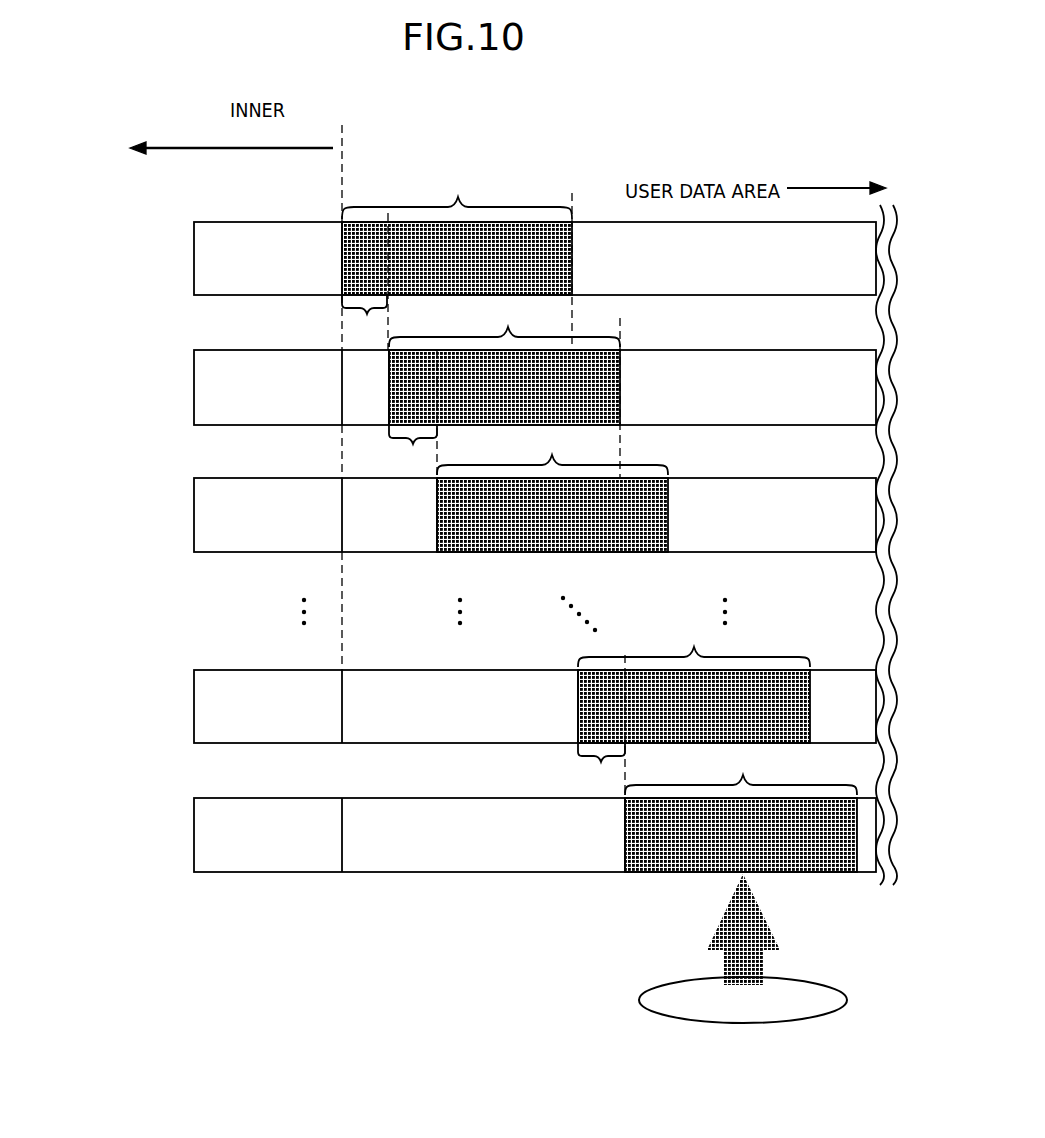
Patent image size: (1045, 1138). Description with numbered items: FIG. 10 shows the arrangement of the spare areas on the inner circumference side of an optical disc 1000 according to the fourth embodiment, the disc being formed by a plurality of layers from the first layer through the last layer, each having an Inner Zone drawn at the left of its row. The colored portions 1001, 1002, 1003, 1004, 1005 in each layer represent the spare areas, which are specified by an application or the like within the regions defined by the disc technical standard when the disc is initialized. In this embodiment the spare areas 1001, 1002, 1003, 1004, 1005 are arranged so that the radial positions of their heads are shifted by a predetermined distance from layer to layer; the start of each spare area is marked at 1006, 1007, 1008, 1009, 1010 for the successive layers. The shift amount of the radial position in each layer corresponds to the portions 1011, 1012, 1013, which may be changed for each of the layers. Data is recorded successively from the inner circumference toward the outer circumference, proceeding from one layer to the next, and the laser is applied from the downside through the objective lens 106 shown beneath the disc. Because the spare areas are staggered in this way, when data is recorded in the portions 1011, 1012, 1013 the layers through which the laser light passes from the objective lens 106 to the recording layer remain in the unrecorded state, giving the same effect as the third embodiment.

The optical disc 1000 is at (120, 225).
The spare area 1001 is at (457, 231).
The spare area 1002 is at (505, 331).
The spare area 1003 is at (550, 460).
The spare area 1004 is at (694, 681).
The spare area 1005 is at (743, 777).
The inner boundary of inner zone 0 1006 is at (340, 243).
The inner boundary of inner zone 1 1007 is at (389, 393).
The inner boundary of inner zone 2 1008 is at (437, 528).
The inner boundary of inner zone (X-1) 1009 is at (578, 717).
The inner boundary of inner zone X 1010 is at (625, 847).
The shift amount of radial position 1011 is at (366, 316).
The shift amount of radial position 1012 is at (413, 443).
The shift amount of radial position 1013 is at (601, 760).
The objective lens 106 is at (823, 981).